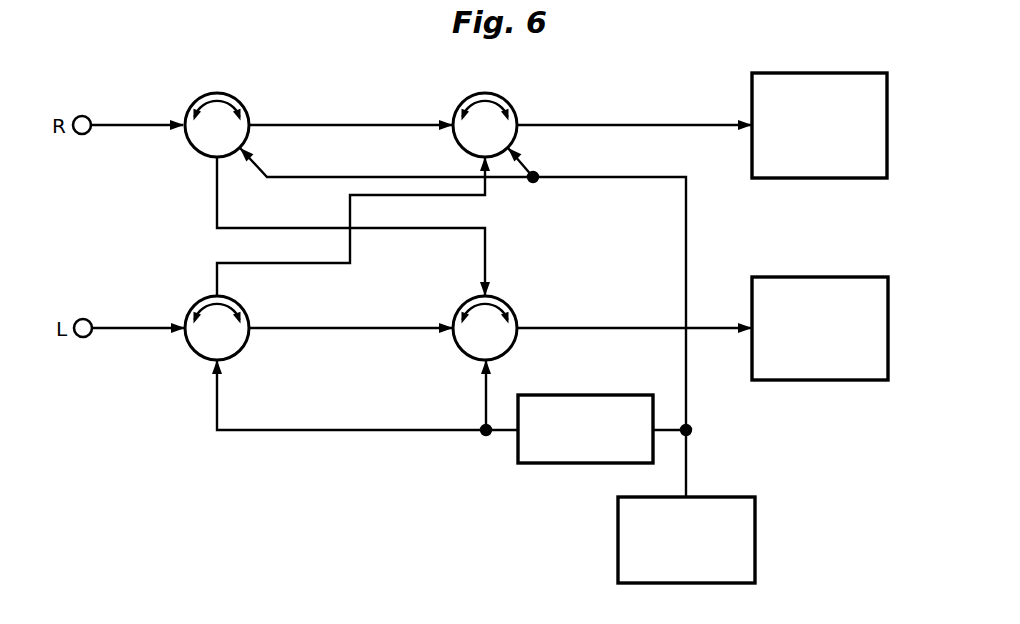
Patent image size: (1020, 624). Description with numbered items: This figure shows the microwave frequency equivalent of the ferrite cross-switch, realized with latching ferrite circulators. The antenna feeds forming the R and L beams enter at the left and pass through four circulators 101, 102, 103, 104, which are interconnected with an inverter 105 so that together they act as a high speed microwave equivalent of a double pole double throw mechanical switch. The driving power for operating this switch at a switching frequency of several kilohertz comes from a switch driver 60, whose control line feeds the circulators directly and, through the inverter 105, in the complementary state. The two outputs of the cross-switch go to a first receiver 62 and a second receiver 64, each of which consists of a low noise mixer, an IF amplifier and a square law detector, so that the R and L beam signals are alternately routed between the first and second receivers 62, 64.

The circulator 101 is at (254, 89).
The circulator 102 is at (524, 87).
The circulator 103 is at (254, 292).
The circulator 104 is at (522, 292).
The inverter 105 is at (600, 395).
The switch driver 60 is at (716, 497).
The first receiver 62 is at (846, 73).
The second receiver 64 is at (843, 277).